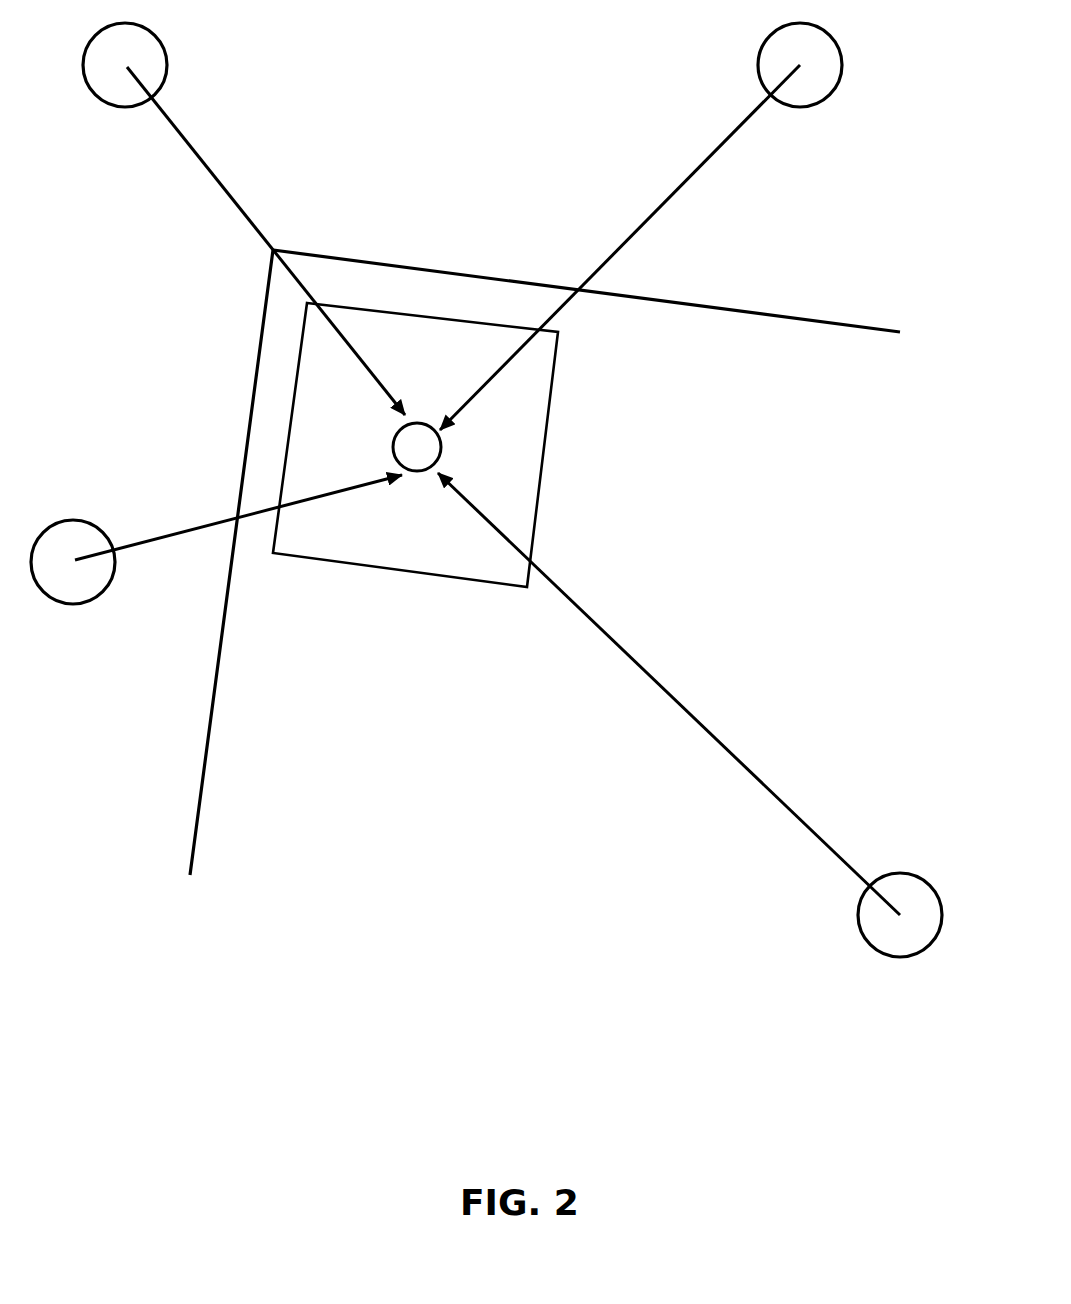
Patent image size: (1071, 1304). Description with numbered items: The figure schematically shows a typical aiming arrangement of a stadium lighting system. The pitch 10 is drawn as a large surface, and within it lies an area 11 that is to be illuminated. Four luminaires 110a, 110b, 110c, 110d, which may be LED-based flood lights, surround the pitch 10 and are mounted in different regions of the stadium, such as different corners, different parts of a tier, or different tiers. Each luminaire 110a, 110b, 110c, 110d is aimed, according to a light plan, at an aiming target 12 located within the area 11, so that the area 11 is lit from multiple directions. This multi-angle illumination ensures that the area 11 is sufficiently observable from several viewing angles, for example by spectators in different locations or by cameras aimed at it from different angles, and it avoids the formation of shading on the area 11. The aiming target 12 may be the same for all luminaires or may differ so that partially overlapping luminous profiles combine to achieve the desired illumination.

The pitch 10 is at (417, 265).
The area 11 is at (370, 565).
The aiming target 12 is at (420, 450).
The luminaire 110a is at (807, 95).
The luminaire 110b is at (122, 92).
The luminaire 110c is at (73, 595).
The luminaire 110d is at (902, 945).